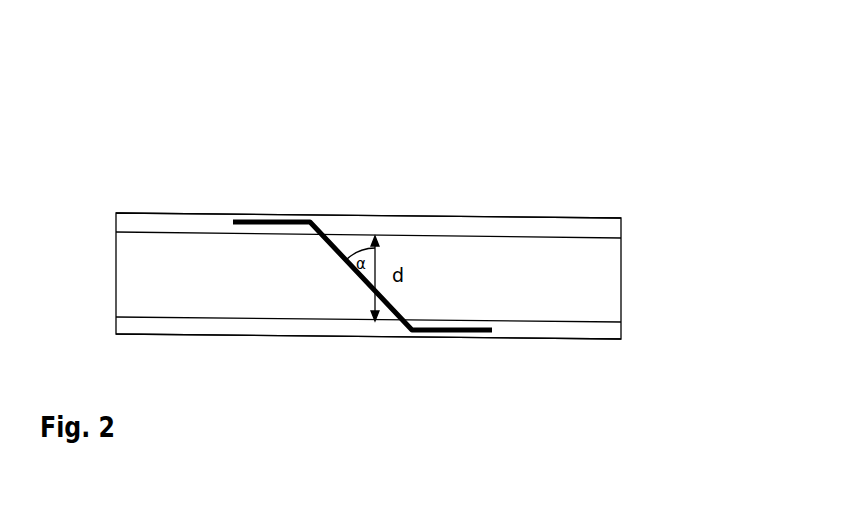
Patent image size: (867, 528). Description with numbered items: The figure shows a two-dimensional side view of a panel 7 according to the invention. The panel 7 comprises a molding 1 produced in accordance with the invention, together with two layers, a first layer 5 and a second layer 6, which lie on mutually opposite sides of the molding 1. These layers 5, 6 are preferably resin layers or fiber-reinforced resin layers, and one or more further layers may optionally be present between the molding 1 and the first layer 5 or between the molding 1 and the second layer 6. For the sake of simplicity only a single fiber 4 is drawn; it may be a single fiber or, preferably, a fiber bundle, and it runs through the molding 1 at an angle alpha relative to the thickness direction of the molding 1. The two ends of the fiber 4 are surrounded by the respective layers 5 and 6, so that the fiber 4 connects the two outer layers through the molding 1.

The molding 1 is at (608, 283).
The fiber 4 is at (325, 245).
The first layer 5 is at (598, 331).
The second layer 6 is at (600, 226).
The panel 7 is at (291, 173).